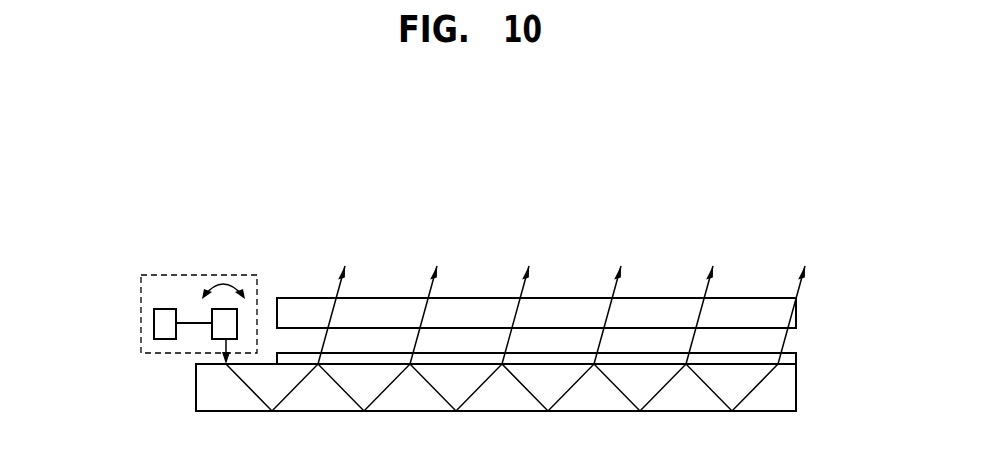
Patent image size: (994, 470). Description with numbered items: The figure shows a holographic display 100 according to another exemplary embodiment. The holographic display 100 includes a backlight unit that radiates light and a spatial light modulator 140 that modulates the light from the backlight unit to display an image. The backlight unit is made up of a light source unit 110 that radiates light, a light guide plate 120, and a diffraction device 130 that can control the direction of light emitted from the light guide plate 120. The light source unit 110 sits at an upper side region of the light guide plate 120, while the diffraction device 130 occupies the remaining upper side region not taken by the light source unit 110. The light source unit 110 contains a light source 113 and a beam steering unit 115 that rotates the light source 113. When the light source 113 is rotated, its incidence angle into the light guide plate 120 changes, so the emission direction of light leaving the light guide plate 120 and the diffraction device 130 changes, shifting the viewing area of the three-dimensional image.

The holographic display 100 is at (147, 184).
The light source unit 110 is at (171, 275).
The light source 113 is at (237, 319).
The beam steering unit 115 is at (154, 323).
The light guide plate 120 is at (796, 393).
The diffraction device 130 is at (796, 358).
The spatial light modulator 140 is at (796, 321).